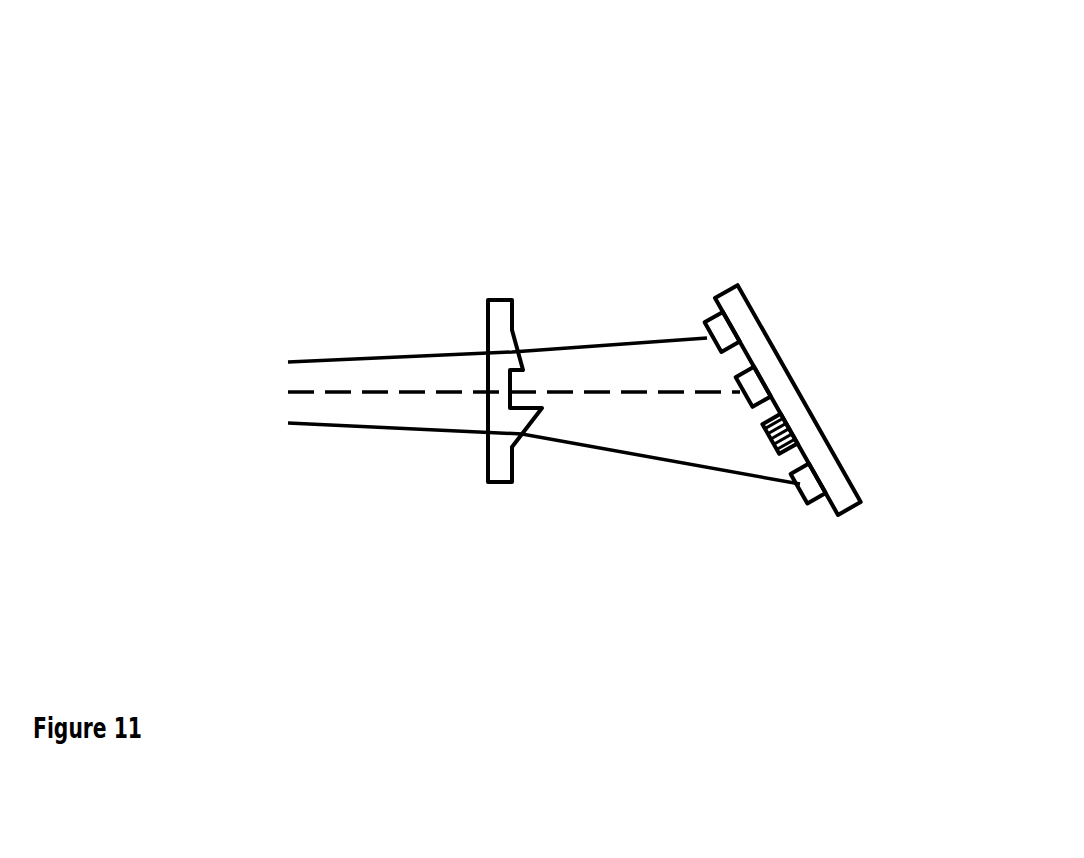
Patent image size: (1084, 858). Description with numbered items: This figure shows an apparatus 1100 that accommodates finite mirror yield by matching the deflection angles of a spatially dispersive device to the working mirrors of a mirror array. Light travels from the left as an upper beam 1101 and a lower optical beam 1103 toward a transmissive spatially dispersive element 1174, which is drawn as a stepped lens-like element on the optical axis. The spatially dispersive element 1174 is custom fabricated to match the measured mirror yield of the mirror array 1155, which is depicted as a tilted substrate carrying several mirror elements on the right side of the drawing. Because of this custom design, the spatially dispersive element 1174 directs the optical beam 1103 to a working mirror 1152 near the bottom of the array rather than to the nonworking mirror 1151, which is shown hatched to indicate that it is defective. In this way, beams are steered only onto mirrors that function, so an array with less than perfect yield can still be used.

The optical system 1100 is at (658, 135).
The upper light ray 1101 is at (317, 352).
The optical beam 1103 is at (313, 432).
The spatially dispersive element 1174 is at (500, 287).
The mirror array 1155 is at (792, 368).
The nonworking mirror 1151 is at (768, 450).
The working mirror 1152 is at (806, 511).